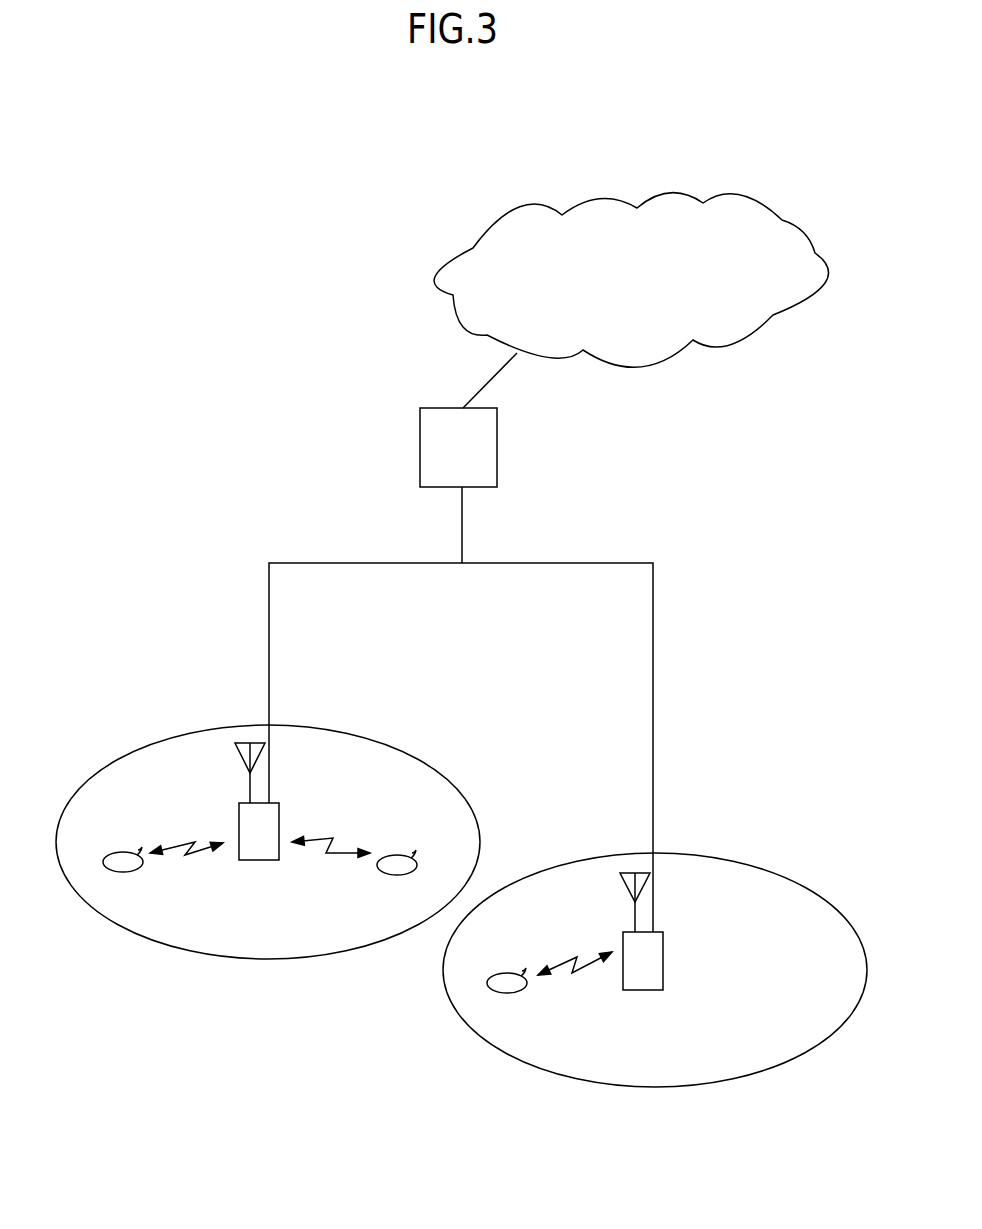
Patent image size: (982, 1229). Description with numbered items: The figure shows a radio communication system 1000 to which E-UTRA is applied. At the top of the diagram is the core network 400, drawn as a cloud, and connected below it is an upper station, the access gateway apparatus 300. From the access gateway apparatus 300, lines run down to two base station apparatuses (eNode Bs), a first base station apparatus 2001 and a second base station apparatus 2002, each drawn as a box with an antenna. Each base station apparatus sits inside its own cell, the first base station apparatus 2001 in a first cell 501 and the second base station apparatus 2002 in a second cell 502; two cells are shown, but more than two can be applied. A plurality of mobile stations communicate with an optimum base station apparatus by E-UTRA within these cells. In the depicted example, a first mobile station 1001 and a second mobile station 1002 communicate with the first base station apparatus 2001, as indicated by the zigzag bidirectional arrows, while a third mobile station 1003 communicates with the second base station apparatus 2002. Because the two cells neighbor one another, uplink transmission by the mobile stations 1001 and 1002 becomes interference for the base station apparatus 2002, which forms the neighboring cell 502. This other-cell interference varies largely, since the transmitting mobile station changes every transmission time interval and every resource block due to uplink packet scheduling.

The radio communication system 1000 is at (115, 174).
The core network 400 is at (678, 196).
The access gateway apparatus 300 is at (497, 442).
The cell 501 is at (340, 954).
The cell 502 is at (737, 1078).
The base station apparatus 2001 is at (279, 806).
The base station apparatus 2002 is at (663, 954).
The mobile station 1001 is at (127, 872).
The mobile station 1002 is at (393, 875).
The mobile station 1003 is at (509, 993).